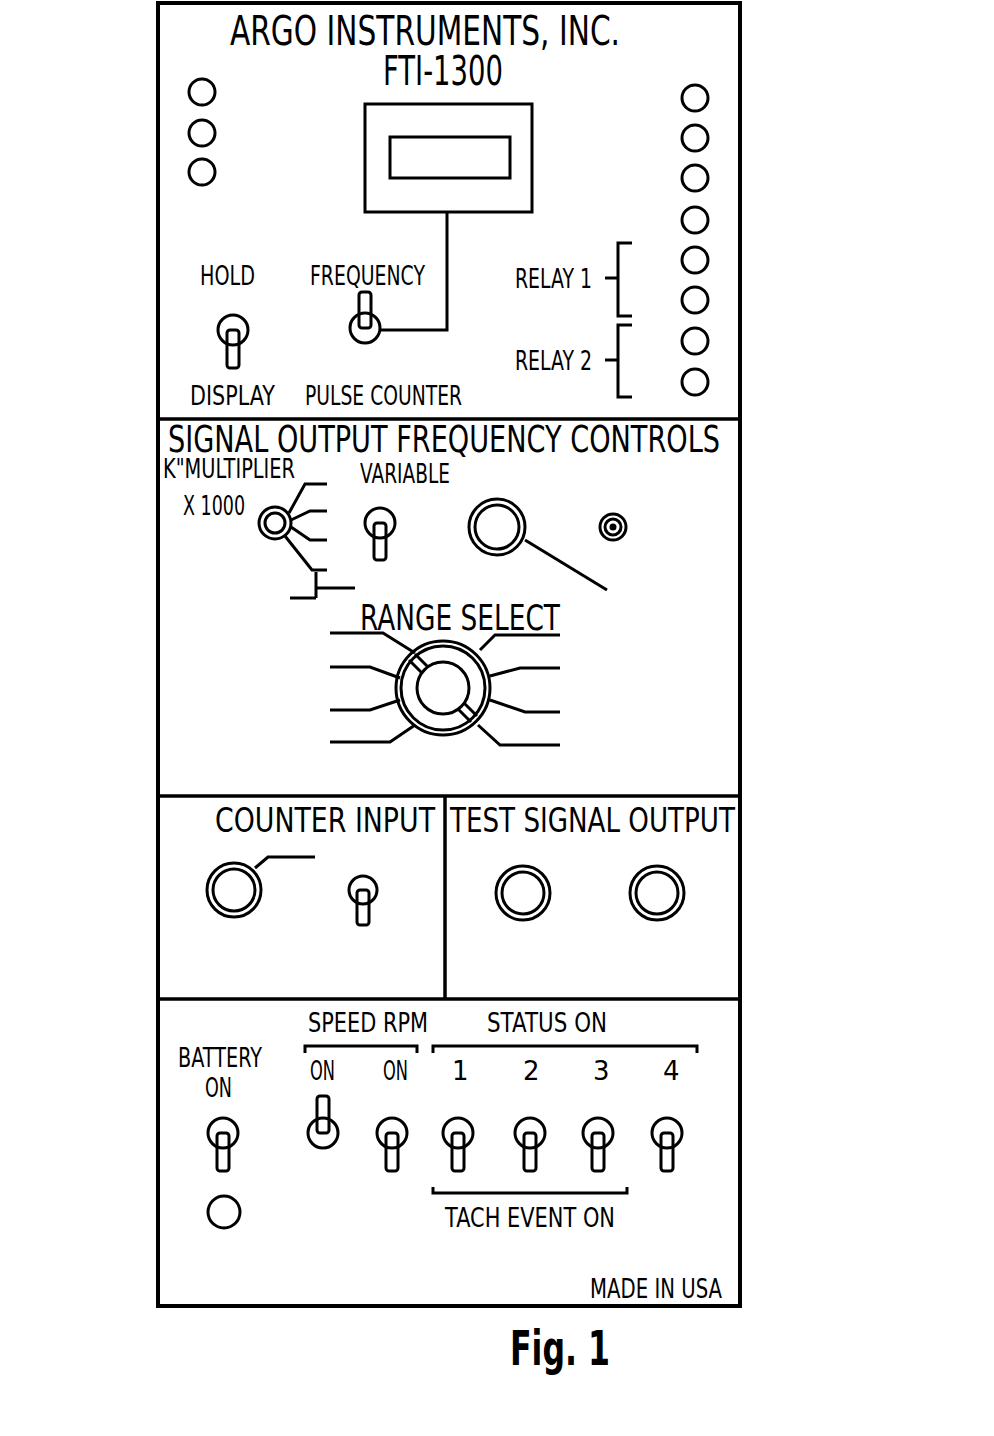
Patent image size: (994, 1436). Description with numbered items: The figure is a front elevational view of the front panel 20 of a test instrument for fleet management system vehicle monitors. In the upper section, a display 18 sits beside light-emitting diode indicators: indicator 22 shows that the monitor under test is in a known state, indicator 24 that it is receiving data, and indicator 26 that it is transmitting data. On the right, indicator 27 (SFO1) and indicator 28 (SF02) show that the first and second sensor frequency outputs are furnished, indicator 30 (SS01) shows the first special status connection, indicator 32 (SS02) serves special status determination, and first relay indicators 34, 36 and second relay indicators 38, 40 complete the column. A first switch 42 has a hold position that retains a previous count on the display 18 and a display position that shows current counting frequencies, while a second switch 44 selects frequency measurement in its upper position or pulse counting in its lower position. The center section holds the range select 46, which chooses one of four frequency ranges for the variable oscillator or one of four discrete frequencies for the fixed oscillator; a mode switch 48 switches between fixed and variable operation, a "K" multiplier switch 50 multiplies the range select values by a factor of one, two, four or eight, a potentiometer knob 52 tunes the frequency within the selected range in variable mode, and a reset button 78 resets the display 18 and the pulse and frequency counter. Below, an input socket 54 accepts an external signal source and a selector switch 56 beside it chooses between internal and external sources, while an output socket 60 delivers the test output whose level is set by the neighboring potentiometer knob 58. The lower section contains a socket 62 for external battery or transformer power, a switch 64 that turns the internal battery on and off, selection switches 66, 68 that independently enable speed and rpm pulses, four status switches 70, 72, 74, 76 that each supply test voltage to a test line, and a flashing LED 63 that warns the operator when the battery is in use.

The front panel 20 is at (720, 50).
The display 18 is at (281, 217).
The indicator 22 is at (189, 172).
The indicator 24 is at (189, 133).
The indicator 26 is at (189, 92).
The indicator SFO1 27 is at (708, 98).
The indicator SF02 28 is at (708, 138).
The indicator SS01 30 is at (708, 178).
The indicator SS02 32 is at (708, 220).
The first relay indicator 34 is at (708, 260).
The first relay indicator 36 is at (708, 300).
The second relay indicator 38 is at (708, 341).
The second relay indicator 40 is at (708, 382).
The first switch 42 is at (219, 335).
The second switch 44 is at (205, 314).
The range select 46 is at (396, 688).
The mode switch 48 is at (212, 498).
The "K" multiplier switch 50 is at (259, 523).
The potentiometer knob 52 is at (671, 560).
The input socket 54 is at (207, 890).
The selector switch 56 is at (222, 931).
The potentiometer knob 58 is at (682, 903).
The output socket 60 is at (684, 893).
The socket 62 is at (372, 1317).
The flashing LED 63 is at (208, 1212).
The switch 64 is at (208, 1133).
The selection switch 66 is at (310, 1128).
The selection switch 68 is at (218, 1155).
The status switch 70 is at (540, 1068).
The status switch 72 is at (694, 1127).
The status switch 74 is at (728, 1144).
The status switch 76 is at (684, 1138).
The reset button 78 is at (626, 527).